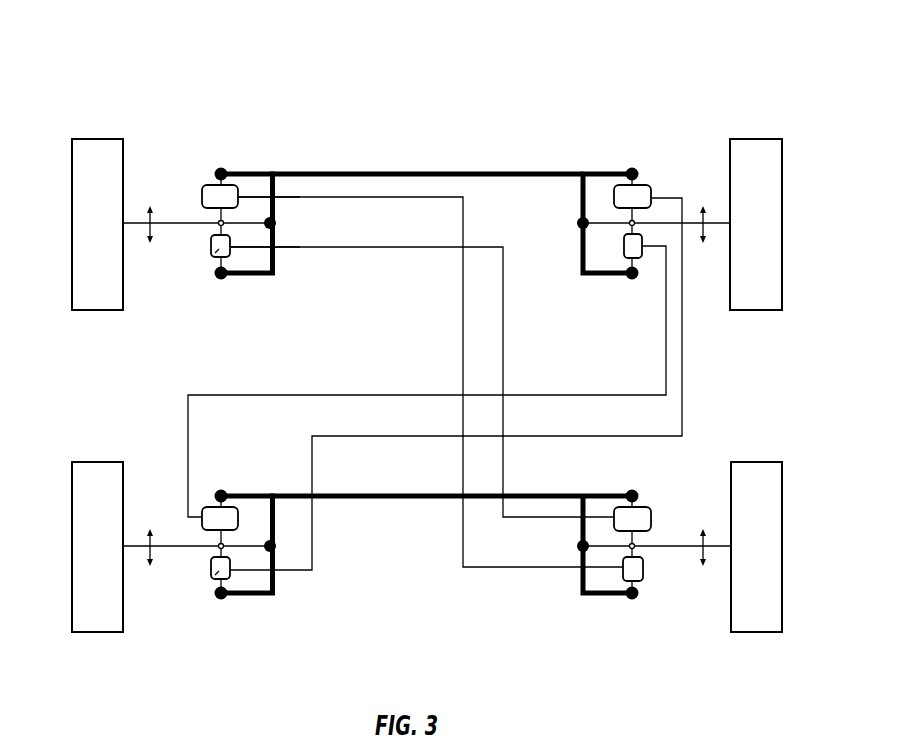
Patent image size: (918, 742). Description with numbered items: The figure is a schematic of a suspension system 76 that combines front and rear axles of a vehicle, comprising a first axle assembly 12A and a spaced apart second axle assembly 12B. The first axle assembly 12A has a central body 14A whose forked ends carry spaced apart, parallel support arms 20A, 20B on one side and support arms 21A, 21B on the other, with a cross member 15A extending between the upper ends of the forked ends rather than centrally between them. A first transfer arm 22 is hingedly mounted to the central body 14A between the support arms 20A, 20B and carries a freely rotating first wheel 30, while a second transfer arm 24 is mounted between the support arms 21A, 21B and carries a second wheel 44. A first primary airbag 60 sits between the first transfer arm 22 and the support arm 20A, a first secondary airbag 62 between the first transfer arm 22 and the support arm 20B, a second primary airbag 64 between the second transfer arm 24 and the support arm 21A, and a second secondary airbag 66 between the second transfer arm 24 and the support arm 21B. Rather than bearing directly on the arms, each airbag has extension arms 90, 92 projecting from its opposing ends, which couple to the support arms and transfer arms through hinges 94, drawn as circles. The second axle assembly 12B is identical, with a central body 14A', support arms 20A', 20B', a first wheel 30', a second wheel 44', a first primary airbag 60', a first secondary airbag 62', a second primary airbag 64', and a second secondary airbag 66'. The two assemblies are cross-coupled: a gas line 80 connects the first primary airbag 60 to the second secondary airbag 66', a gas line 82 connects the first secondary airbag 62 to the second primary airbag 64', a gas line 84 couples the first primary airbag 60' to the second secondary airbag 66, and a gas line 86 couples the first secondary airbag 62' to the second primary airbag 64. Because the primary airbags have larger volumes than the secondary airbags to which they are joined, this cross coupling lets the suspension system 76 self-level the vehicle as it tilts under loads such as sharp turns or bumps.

The suspension system 76 is at (499, 82).
The first transfer arm 22 is at (180, 223).
The second transfer arm 24 is at (692, 223).
The first wheel 30 is at (79, 251).
The second wheel 44 is at (774, 245).
The first wheel 30' is at (78, 574).
The second wheel 44' is at (777, 569).
The first primary airbag 60 is at (185, 148).
The first secondary airbag 62 is at (196, 283).
The second primary airbag 64 is at (655, 176).
The second secondary airbag 66 is at (584, 260).
The first primary airbag 60' is at (181, 470).
The first secondary airbag 62' is at (194, 608).
The second primary airbag 64' is at (658, 500).
The second secondary airbag 66' is at (581, 584).
The hinges 94 is at (221, 170).
The support arm 20A is at (264, 183).
The support arm 20B is at (286, 270).
The central body 14A is at (331, 155).
The cross member 15A is at (428, 172).
The first axle assembly 12A is at (532, 172).
The support arm 21A is at (608, 172).
The support arm 21B is at (600, 275).
The extension arm 90 is at (232, 184).
The extension arm 92 is at (224, 213).
The gas line 80 is at (463, 313).
The gas line 82 is at (477, 247).
The gas line 84 is at (338, 395).
The gas line 86 is at (558, 436).
The support arm 20A' is at (265, 505).
The support arm 20B' is at (289, 593).
The central body 14A' is at (360, 477).
The second axle assembly 12B is at (532, 494).